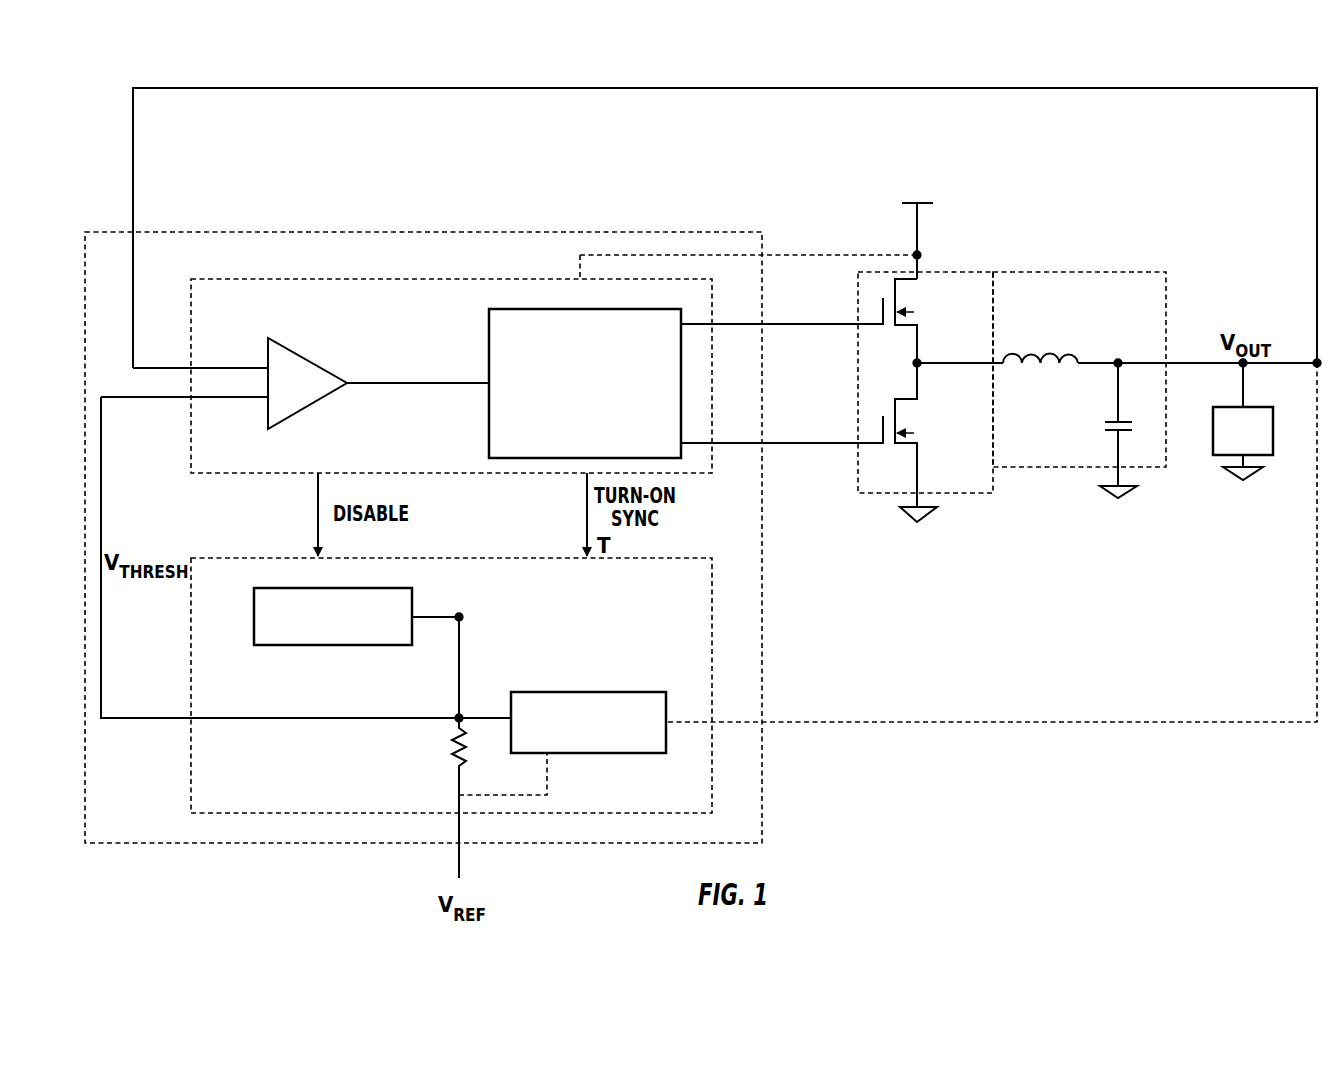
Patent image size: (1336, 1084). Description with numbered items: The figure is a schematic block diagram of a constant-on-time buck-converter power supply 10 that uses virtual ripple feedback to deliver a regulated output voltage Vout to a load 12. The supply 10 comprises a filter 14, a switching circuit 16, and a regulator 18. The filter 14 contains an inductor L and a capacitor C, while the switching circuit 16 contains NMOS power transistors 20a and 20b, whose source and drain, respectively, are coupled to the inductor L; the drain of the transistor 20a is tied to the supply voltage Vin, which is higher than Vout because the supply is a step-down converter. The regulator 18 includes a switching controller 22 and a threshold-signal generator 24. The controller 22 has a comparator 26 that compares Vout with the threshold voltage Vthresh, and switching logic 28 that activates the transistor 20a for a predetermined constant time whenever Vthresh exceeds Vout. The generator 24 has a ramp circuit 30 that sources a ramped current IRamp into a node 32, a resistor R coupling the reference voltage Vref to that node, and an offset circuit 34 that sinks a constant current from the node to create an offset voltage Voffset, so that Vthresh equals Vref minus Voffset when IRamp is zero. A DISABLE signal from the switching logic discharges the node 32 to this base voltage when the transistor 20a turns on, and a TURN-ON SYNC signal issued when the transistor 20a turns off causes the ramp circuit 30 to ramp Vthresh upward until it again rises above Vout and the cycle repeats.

The constant-on-time buck-converter power supply 10 is at (1013, 819).
The load 12 is at (1257, 407).
The filter 14 is at (1020, 468).
The switching circuit 16 is at (965, 272).
The regulator 18 is at (300, 843).
The NMOS power transistor 20a is at (912, 293).
The NMOS power transistor 20b is at (912, 417).
The switching controller 22 is at (222, 473).
The threshold-signal generator 24 is at (712, 626).
The comparator 26 is at (305, 358).
The switching logic 28 is at (617, 309).
The ramp circuit 30 is at (360, 588).
The node 32 is at (459, 705).
The offset circuit 34 is at (623, 692).